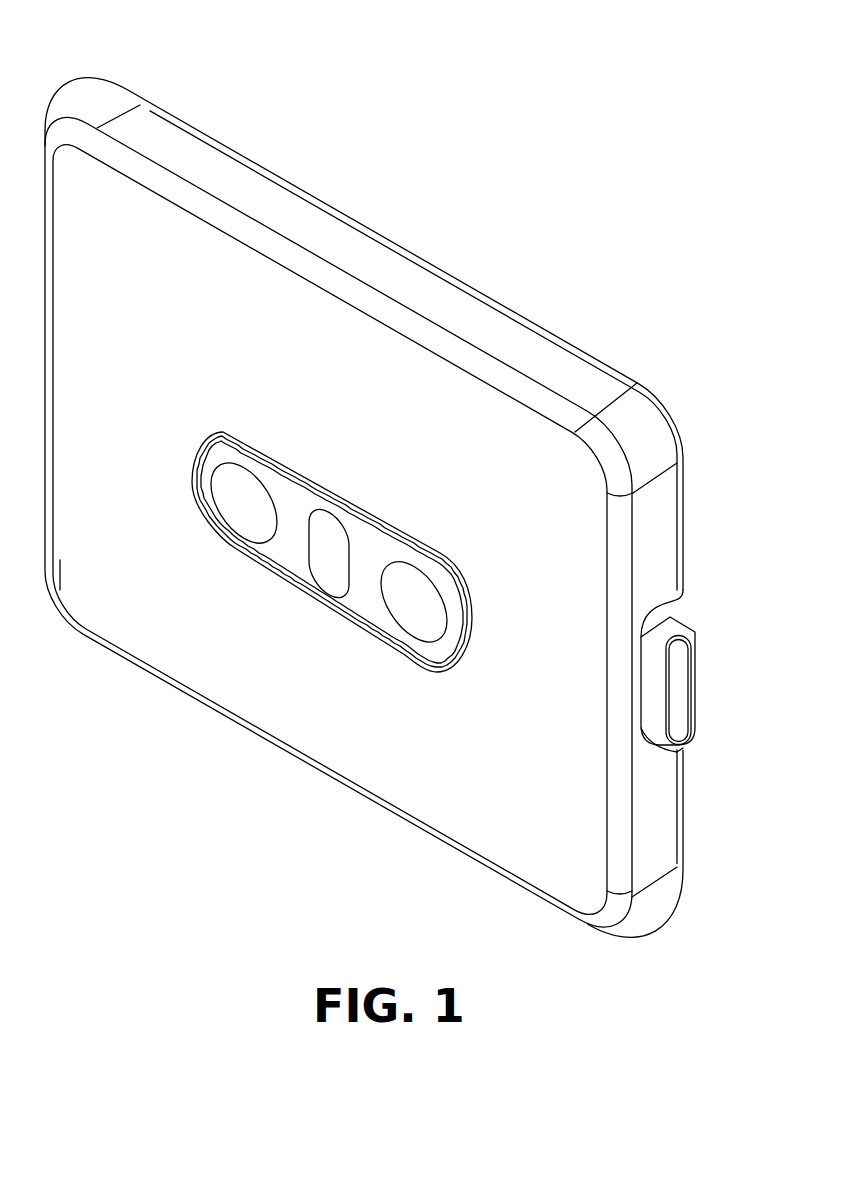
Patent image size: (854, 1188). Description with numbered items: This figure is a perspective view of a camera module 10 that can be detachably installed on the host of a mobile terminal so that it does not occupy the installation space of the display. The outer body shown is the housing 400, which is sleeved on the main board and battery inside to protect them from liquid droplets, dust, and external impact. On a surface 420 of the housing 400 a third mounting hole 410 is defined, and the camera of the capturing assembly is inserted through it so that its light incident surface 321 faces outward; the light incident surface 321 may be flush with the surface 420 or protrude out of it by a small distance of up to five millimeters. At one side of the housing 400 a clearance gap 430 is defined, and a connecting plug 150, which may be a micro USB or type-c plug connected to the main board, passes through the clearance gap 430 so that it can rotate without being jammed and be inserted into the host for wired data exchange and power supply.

The camera module 10 is at (53, 31).
The housing 400 is at (470, 335).
The third mounting hole 410 is at (402, 653).
The light incident surface 321 is at (255, 503).
The surface of the housing 420 is at (123, 573).
The clearance gap 430 is at (676, 603).
The connecting plug 150 is at (663, 675).